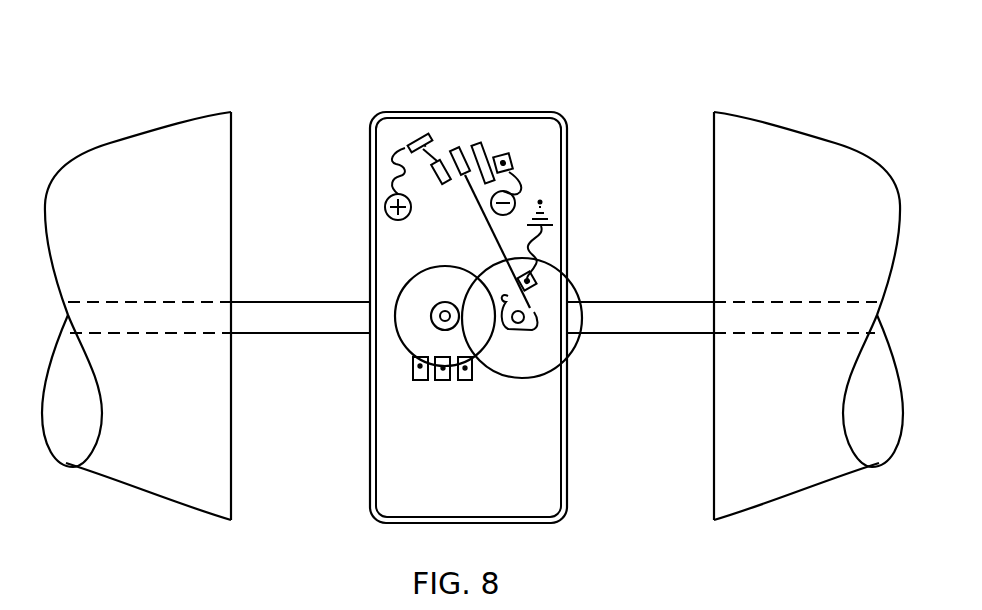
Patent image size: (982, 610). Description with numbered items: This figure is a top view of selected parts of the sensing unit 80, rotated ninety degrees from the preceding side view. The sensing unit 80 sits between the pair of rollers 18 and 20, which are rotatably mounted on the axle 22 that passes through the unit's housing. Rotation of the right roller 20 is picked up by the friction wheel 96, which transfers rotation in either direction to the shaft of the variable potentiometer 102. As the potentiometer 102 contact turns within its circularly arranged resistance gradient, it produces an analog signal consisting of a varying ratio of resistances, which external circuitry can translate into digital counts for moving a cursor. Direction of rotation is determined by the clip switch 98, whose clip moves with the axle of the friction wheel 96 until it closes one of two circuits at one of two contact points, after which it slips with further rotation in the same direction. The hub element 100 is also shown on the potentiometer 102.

The roller 18 is at (168, 127).
The right roller 20 is at (798, 127).
The axle 22 is at (638, 337).
The sensing unit 80 is at (453, 111).
The friction wheel 96 is at (577, 290).
The clip switch 98 is at (462, 138).
The hub 100 is at (440, 306).
The variable potentiometer 102 is at (405, 288).